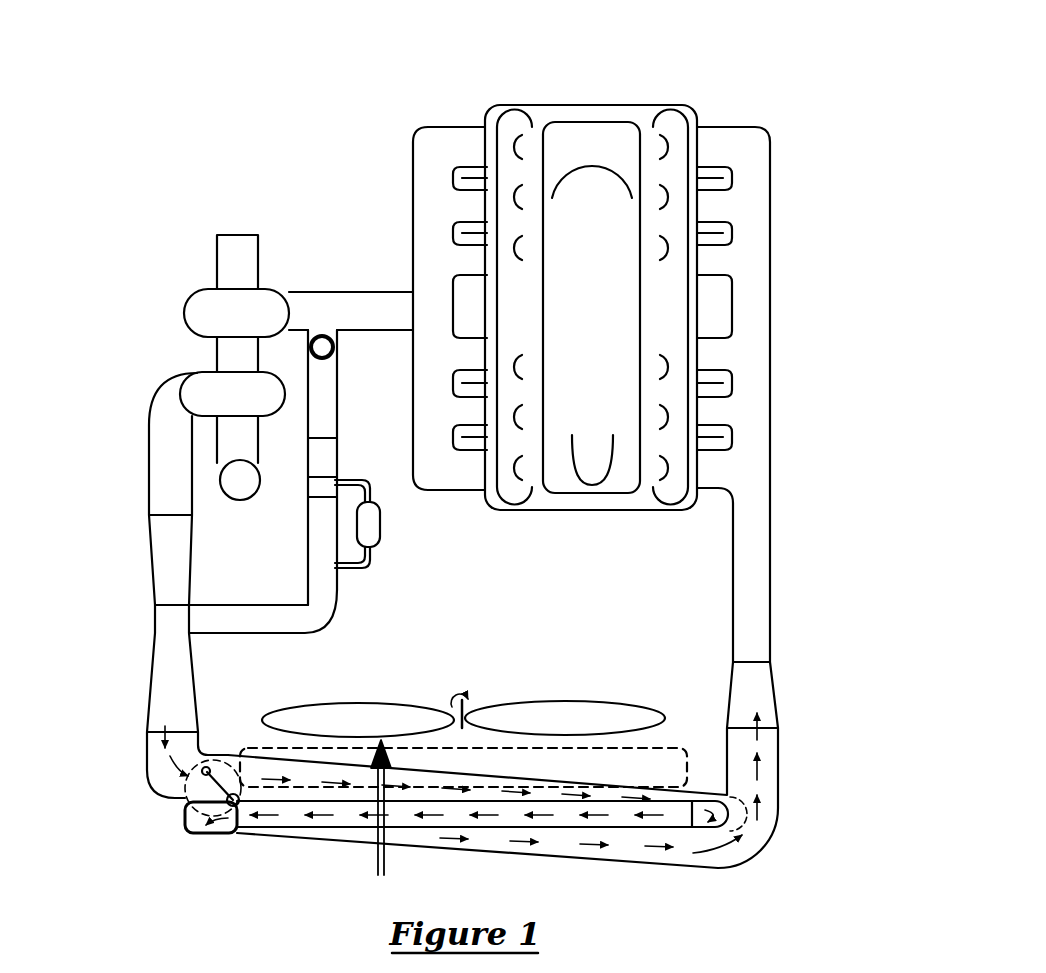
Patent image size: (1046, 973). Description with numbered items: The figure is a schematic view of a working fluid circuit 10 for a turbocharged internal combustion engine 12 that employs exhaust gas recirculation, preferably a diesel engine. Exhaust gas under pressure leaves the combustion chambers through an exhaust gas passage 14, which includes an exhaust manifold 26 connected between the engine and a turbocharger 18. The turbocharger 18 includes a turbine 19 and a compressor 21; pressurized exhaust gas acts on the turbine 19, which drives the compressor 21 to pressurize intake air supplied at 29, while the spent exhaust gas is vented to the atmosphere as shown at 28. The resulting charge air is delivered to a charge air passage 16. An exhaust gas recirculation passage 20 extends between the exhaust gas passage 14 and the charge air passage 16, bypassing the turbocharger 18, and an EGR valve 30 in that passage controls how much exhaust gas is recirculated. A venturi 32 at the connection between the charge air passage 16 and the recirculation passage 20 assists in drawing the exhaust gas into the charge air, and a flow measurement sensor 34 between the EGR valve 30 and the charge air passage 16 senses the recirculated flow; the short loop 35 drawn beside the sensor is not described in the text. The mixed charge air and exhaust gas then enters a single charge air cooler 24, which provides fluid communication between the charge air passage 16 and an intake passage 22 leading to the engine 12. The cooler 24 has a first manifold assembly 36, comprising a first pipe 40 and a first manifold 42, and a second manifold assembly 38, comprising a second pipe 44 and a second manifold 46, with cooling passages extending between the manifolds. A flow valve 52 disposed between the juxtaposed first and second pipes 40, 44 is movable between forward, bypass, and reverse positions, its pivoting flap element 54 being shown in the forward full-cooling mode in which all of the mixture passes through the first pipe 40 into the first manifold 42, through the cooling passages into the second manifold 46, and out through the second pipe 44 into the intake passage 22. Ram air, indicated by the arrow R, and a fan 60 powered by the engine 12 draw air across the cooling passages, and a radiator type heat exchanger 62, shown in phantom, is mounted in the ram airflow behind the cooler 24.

The working fluid circuit 10 is at (416, 487).
The internal combustion engine 12 is at (586, 265).
The exhaust gas passage 14 is at (341, 300).
The charge air passage 16 is at (183, 552).
The turbocharger 18 is at (219, 313).
The turbine 19 is at (282, 289).
The exhaust gas recirculation passage 20 is at (357, 467).
The compressor 21 is at (197, 373).
The intake passage 22 is at (726, 374).
The single charge air cooler 24 is at (455, 793).
The exhaust manifold 26 is at (412, 150).
The turbine exhaust vent 28 is at (243, 235).
The intake air supply 29 is at (256, 495).
The EGR valve 30 is at (334, 347).
The venturi 32 is at (201, 611).
The flow measurement sensor 34 is at (381, 522).
The bypass conduit 35 is at (336, 480).
The first manifold assembly 36 is at (345, 765).
The second manifold assembly 38 is at (503, 827).
The first pipe 40 is at (147, 767).
The first manifold 42 is at (715, 797).
The second pipe 44 is at (780, 775).
The second manifold 46 is at (200, 836).
The flow valve 52 is at (188, 805).
The valve 54 is at (233, 770).
The fan 60 is at (378, 703).
The radiator type heat exchanger 62 is at (672, 748).